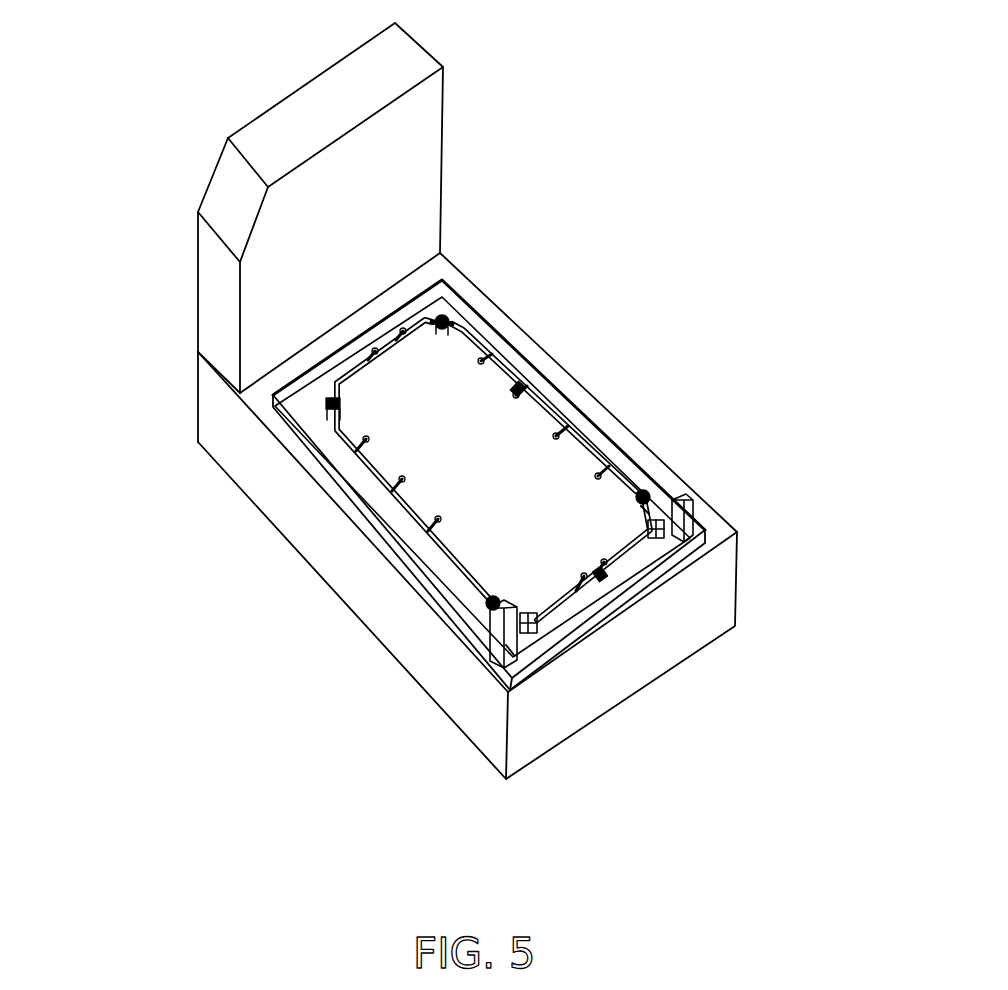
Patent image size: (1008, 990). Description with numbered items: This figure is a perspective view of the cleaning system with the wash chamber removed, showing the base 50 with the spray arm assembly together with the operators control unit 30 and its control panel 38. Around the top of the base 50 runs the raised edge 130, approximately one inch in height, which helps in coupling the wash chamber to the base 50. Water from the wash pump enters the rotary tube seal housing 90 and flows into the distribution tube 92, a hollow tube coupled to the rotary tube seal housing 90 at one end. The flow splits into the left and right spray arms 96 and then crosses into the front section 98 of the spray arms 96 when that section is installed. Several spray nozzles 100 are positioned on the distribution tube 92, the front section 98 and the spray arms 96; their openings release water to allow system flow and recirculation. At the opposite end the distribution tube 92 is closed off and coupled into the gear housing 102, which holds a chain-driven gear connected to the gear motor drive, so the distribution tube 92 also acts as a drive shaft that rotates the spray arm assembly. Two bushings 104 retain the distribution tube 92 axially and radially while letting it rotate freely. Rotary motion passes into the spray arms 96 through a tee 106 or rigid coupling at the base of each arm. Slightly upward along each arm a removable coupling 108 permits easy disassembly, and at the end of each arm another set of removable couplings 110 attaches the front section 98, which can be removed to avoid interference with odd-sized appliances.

The operators control unit 30 is at (425, 50).
The control panel 38 is at (222, 196).
The base 50 is at (730, 568).
The rotary tube seal housing 90 is at (700, 497).
The distribution tube 92 is at (530, 610).
The spray arms 96 is at (600, 462).
The front section 98 is at (438, 316).
The spray nozzles 100 is at (277, 403).
The gear housing 102 is at (508, 672).
The bushings 104 is at (632, 552).
The tee 106 is at (645, 515).
The removable coupling 108 is at (648, 490).
The removable couplings 110 is at (445, 320).
The raised edge 130 is at (372, 503).